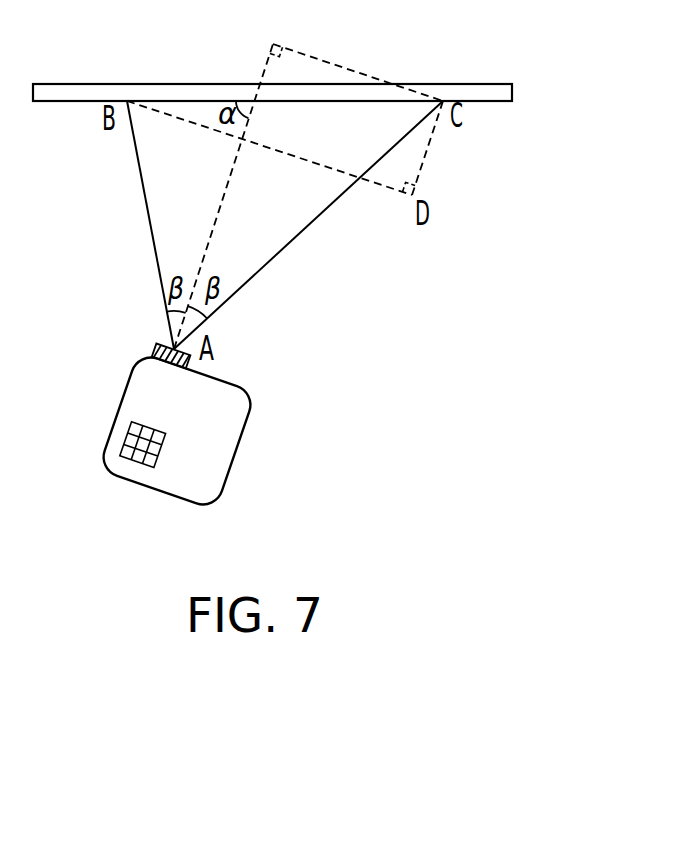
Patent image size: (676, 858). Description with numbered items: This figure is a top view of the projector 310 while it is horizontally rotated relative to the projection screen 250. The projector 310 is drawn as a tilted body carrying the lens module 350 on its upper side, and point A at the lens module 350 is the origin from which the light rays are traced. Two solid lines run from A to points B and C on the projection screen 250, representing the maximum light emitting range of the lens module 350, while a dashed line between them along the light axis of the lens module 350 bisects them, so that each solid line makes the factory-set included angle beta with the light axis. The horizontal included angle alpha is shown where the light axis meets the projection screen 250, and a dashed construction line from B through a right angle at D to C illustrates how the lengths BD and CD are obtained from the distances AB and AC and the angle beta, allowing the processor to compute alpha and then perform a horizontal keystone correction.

The projection screen 250 is at (497, 92).
The projector 310 is at (237, 445).
The lens module 350 is at (153, 350).